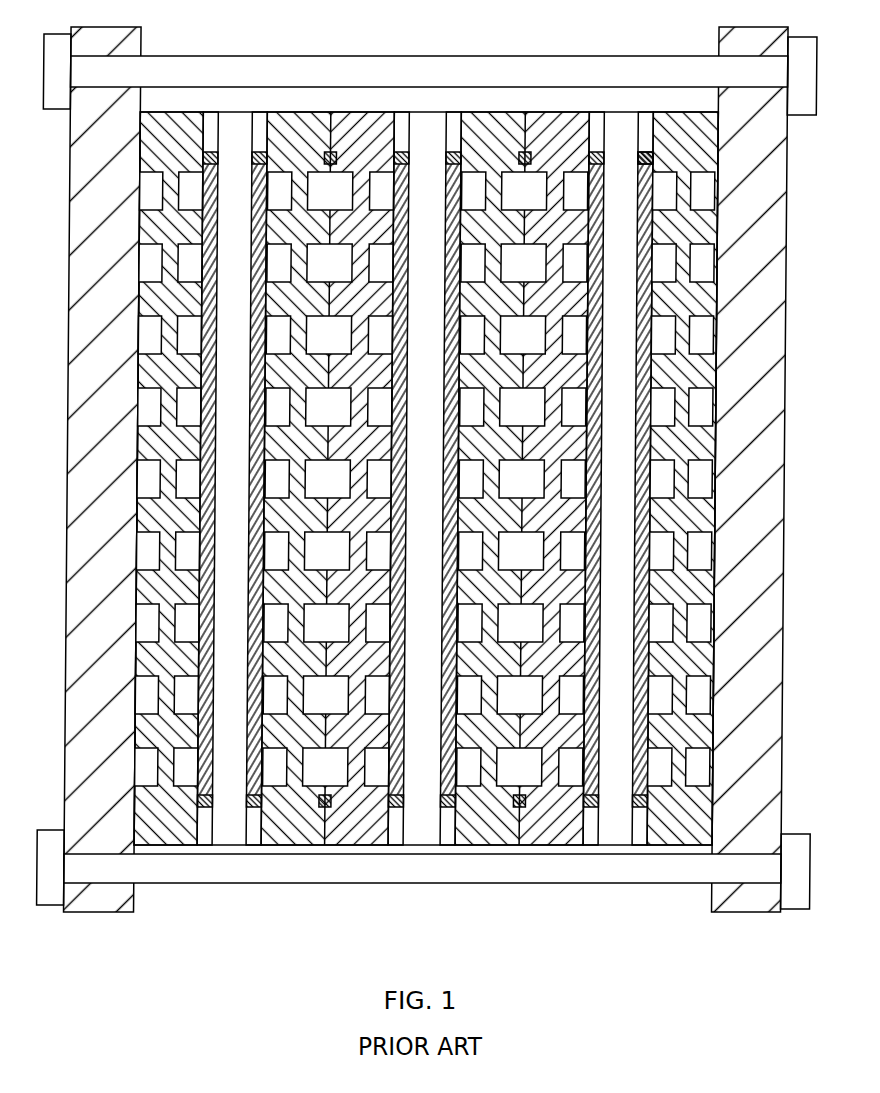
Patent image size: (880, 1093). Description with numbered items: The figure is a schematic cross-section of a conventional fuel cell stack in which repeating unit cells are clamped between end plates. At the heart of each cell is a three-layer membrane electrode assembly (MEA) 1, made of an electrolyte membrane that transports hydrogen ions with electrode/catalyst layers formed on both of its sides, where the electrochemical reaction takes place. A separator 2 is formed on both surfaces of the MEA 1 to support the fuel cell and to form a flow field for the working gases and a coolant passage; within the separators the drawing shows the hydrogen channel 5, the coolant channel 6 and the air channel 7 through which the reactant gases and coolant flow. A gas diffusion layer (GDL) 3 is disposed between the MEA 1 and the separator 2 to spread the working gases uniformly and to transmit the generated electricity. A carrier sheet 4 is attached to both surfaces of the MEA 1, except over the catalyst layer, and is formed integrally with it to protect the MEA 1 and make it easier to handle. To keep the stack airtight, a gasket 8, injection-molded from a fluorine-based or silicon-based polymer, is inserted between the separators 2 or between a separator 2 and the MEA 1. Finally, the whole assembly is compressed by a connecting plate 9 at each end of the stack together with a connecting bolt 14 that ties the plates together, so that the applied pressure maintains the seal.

The membrane electrode assembly (MEA) 1 is at (481, 430).
The separator 2 is at (697, 123).
The gas diffusion layer (GDL) 3 is at (647, 440).
The carrier sheet 4 is at (592, 168).
The hydrogen channel 5 is at (475, 185).
The coolant channel 6 is at (337, 185).
The air channel 7 is at (380, 185).
The gasket 8 is at (650, 153).
The connecting plate 9 is at (69, 292).
The connecting bolt 14 is at (187, 65).